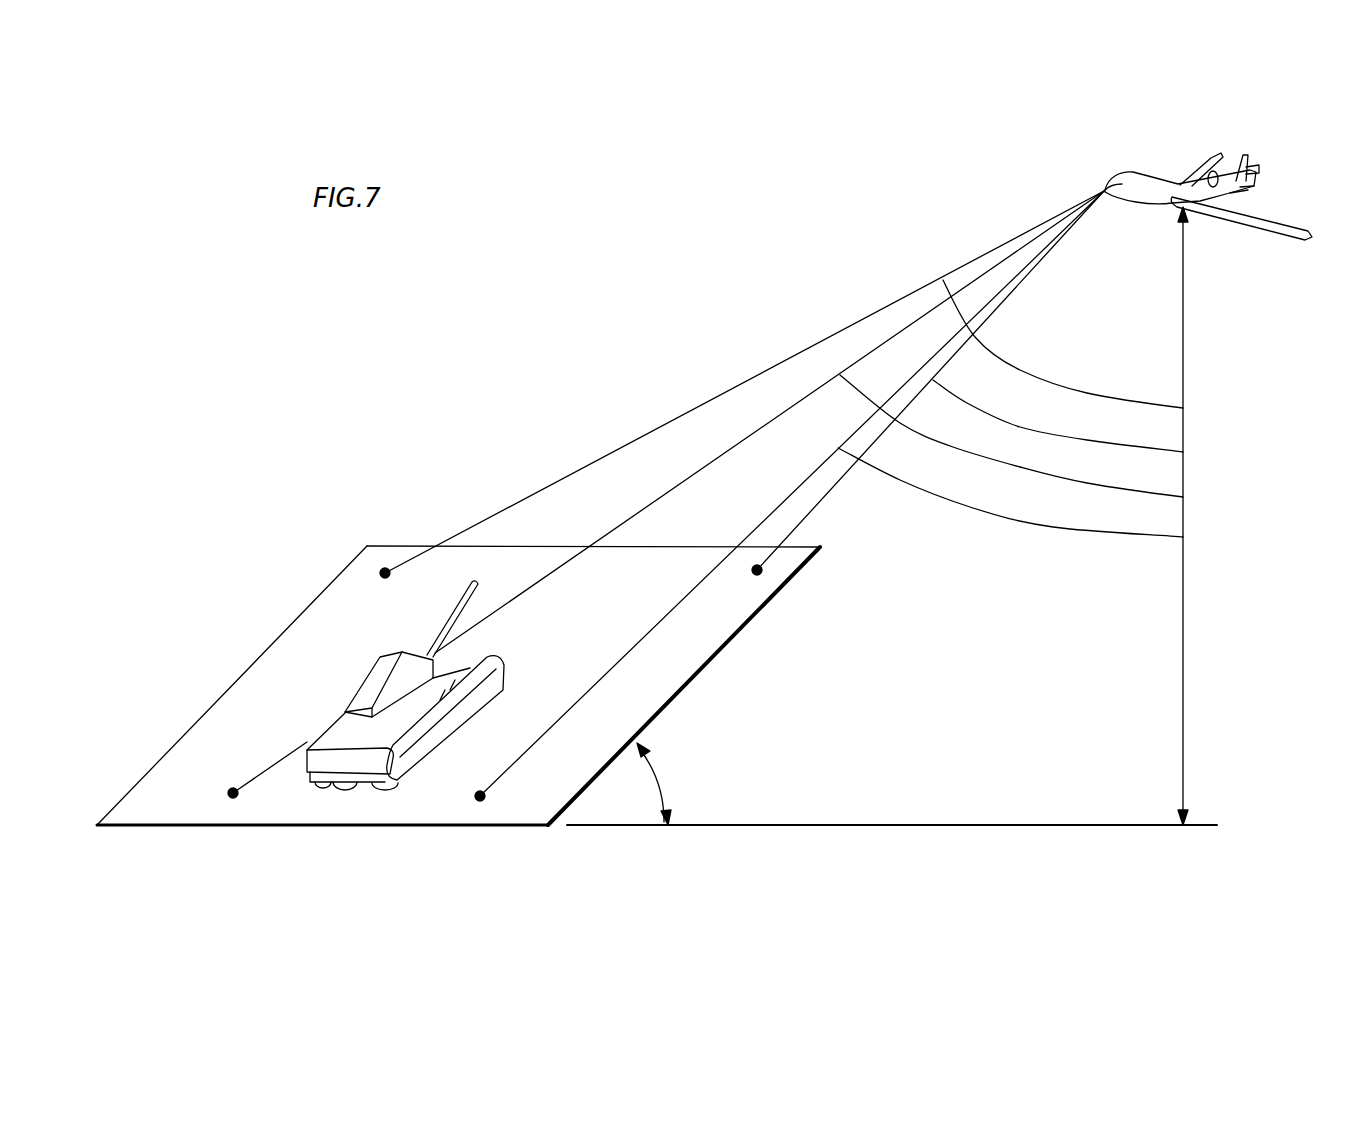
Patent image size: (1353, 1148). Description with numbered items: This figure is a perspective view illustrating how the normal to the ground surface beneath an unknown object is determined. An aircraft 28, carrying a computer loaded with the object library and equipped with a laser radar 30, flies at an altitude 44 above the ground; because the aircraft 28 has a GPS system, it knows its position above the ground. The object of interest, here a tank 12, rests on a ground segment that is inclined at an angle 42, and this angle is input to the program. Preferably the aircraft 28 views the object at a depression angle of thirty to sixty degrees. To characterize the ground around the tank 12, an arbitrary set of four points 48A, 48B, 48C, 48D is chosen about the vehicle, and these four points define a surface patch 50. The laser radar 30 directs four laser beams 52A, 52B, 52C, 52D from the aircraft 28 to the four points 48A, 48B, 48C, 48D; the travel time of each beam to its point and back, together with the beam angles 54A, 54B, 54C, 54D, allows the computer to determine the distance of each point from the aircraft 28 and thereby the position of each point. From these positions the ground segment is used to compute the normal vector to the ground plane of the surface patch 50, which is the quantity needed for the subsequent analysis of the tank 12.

The tank 12 is at (377, 664).
The aircraft 28 is at (1252, 238).
The laser radar 30 is at (1105, 190).
The angle 42 is at (662, 778).
The altitude 44 is at (1183, 673).
The point 48A is at (385, 570).
The point 48B is at (233, 793).
The point 48C is at (480, 796).
The point 48D is at (757, 570).
The surface patch 50 is at (607, 622).
The laser beam 52A is at (658, 427).
The laser beam 52B is at (660, 498).
The laser beam 52C is at (778, 510).
The laser beam 52D is at (944, 380).
The angle 54A is at (1062, 389).
The angle 54B is at (993, 468).
The angle 54C is at (973, 508).
The angle 54D is at (1017, 424).